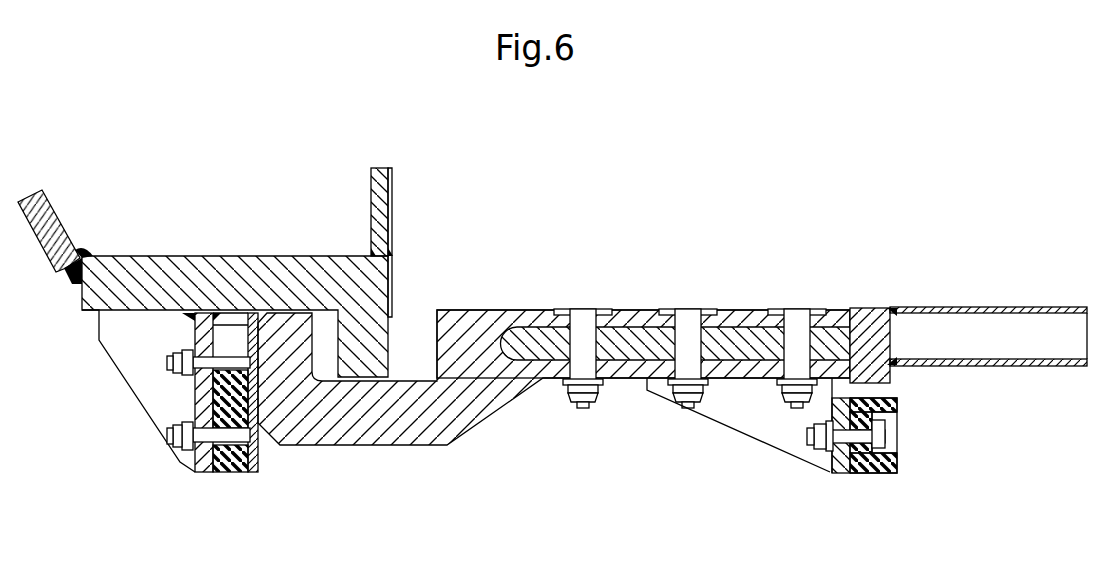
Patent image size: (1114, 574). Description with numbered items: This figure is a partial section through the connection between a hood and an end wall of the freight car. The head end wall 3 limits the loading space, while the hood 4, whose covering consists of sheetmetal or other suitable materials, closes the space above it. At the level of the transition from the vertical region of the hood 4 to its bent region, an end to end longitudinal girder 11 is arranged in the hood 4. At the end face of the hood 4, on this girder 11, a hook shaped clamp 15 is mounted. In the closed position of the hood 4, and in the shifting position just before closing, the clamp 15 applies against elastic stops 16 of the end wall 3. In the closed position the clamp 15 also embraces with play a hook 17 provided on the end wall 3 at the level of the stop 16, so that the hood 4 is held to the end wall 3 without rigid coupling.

The head end wall 3 is at (393, 197).
The hood 4 is at (987, 306).
The longitudinal girder 11 is at (953, 307).
The hook shaped clamp 15 is at (463, 392).
The elastic stop 16 is at (232, 472).
The hook 17 is at (359, 342).